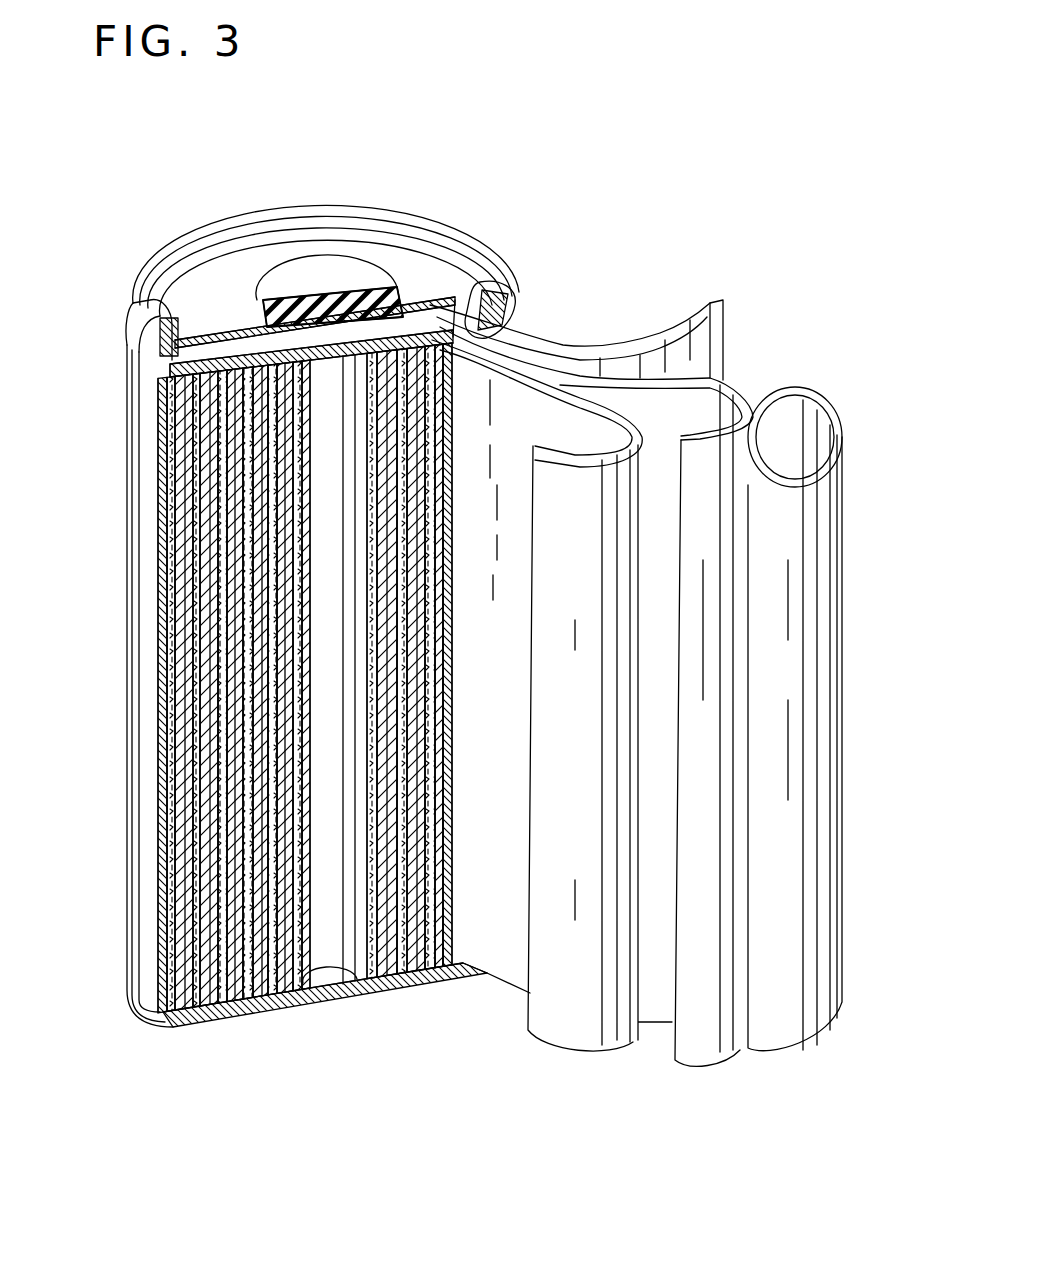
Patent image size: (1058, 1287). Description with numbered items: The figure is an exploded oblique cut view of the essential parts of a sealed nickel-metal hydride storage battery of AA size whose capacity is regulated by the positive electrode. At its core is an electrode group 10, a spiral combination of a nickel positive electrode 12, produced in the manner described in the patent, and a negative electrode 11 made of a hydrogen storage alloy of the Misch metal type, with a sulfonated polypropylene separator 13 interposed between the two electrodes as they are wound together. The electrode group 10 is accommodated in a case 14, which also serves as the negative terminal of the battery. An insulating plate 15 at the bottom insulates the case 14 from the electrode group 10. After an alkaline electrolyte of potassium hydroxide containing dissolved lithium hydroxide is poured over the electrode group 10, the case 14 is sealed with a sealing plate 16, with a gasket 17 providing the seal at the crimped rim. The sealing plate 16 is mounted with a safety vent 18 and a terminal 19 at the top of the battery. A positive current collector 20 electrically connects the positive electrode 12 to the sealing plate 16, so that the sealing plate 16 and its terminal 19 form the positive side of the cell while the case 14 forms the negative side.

The electrode group 10 is at (848, 423).
The negative electrode 11 is at (823, 590).
The nickel positive electrode 12 is at (617, 900).
The separator 13 is at (722, 735).
The case 14 is at (132, 733).
The insulating plate 15 is at (293, 1010).
The sealing plate 16 is at (472, 265).
The gasket 17 is at (142, 310).
The safety vent 18 is at (327, 300).
The terminal 19 is at (298, 278).
The positive current collector 20 is at (135, 370).